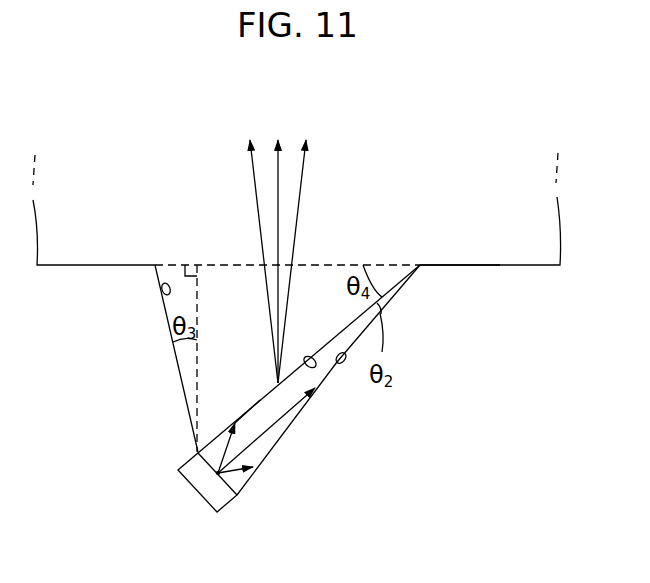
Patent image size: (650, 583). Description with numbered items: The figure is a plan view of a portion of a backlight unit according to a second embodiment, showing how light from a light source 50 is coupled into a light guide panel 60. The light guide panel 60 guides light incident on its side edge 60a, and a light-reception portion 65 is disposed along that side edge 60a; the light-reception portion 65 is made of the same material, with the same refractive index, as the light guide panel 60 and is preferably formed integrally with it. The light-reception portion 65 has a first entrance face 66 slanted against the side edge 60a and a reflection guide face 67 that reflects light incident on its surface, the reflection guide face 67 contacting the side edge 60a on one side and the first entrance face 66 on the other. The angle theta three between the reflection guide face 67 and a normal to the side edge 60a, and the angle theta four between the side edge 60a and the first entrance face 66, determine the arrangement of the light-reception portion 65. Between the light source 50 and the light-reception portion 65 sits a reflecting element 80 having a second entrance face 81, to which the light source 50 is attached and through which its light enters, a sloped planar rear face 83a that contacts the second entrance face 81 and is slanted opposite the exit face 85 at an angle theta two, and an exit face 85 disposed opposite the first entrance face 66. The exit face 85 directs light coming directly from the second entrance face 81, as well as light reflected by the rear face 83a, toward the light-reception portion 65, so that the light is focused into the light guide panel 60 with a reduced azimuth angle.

The light source 50 is at (198, 478).
The light guide panel 60 is at (523, 250).
The side edge 60a is at (458, 265).
The light-reception portion 65 is at (157, 345).
The first entrance face 66 is at (318, 355).
The reflection guide face 67 is at (163, 295).
The reflecting element 80 is at (295, 462).
The second entrance face 81 is at (223, 487).
The rear face 83a is at (344, 364).
The exit face 85 is at (250, 407).